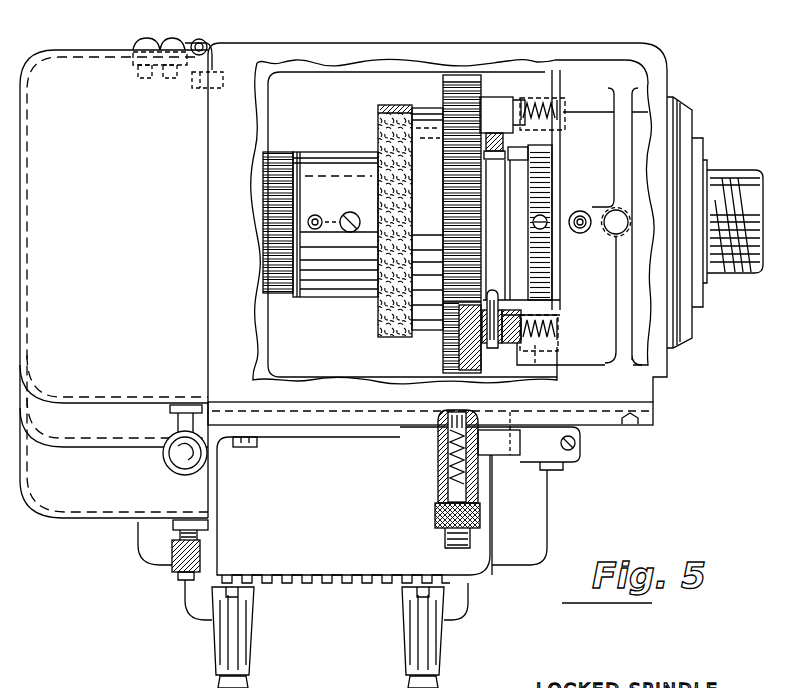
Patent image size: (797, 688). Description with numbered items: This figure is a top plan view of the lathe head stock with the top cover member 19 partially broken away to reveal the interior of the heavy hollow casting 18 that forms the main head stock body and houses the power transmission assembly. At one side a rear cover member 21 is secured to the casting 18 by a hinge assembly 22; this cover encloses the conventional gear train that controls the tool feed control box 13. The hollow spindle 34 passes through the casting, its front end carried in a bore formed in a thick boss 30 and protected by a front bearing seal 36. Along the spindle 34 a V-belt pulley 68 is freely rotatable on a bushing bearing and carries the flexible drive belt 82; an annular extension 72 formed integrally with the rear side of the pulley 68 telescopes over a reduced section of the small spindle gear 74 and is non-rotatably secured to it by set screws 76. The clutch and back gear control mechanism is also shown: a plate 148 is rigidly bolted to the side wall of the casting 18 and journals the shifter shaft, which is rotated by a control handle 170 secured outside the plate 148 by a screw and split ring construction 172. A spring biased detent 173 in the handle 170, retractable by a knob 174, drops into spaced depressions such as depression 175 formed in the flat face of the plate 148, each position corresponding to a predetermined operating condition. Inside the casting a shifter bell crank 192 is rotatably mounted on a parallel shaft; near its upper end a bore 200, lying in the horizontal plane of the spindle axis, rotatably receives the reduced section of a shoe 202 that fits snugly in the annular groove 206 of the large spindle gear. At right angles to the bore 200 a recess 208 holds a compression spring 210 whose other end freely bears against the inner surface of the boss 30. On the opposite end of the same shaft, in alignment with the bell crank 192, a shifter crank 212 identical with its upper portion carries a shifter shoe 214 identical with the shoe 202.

The tool feed control box 13 is at (497, 579).
The casting 18 is at (618, 43).
The top cover member 19 is at (303, 47).
The rear cover member 21 is at (83, 47).
The hinge assembly 22 is at (213, 43).
The boss 30 is at (577, 110).
The hollow spindle 34 is at (737, 170).
The front bearing seal 36 is at (690, 97).
The V-belt pulley 68 is at (422, 337).
The annular extension 72 is at (335, 152).
The small spindle gear 74 is at (268, 152).
The set screws 76 is at (313, 216).
The flexible drive belt 82 is at (380, 105).
The plate 148 is at (655, 415).
The control handle 170 is at (506, 456).
The screw and split ring construction 172 is at (582, 446).
The spring biased detent 173 is at (440, 445).
The knob 174 is at (437, 512).
The depression 175 is at (452, 414).
The shifter bell crank 192 is at (494, 350).
The bore 200 is at (478, 345).
The shoe 202 is at (548, 304).
The annular groove 206 is at (500, 196).
The recess 208 is at (528, 350).
The compression spring 210 is at (537, 100).
The shifter crank 212 is at (490, 97).
The shifter shoe 214 is at (497, 133).